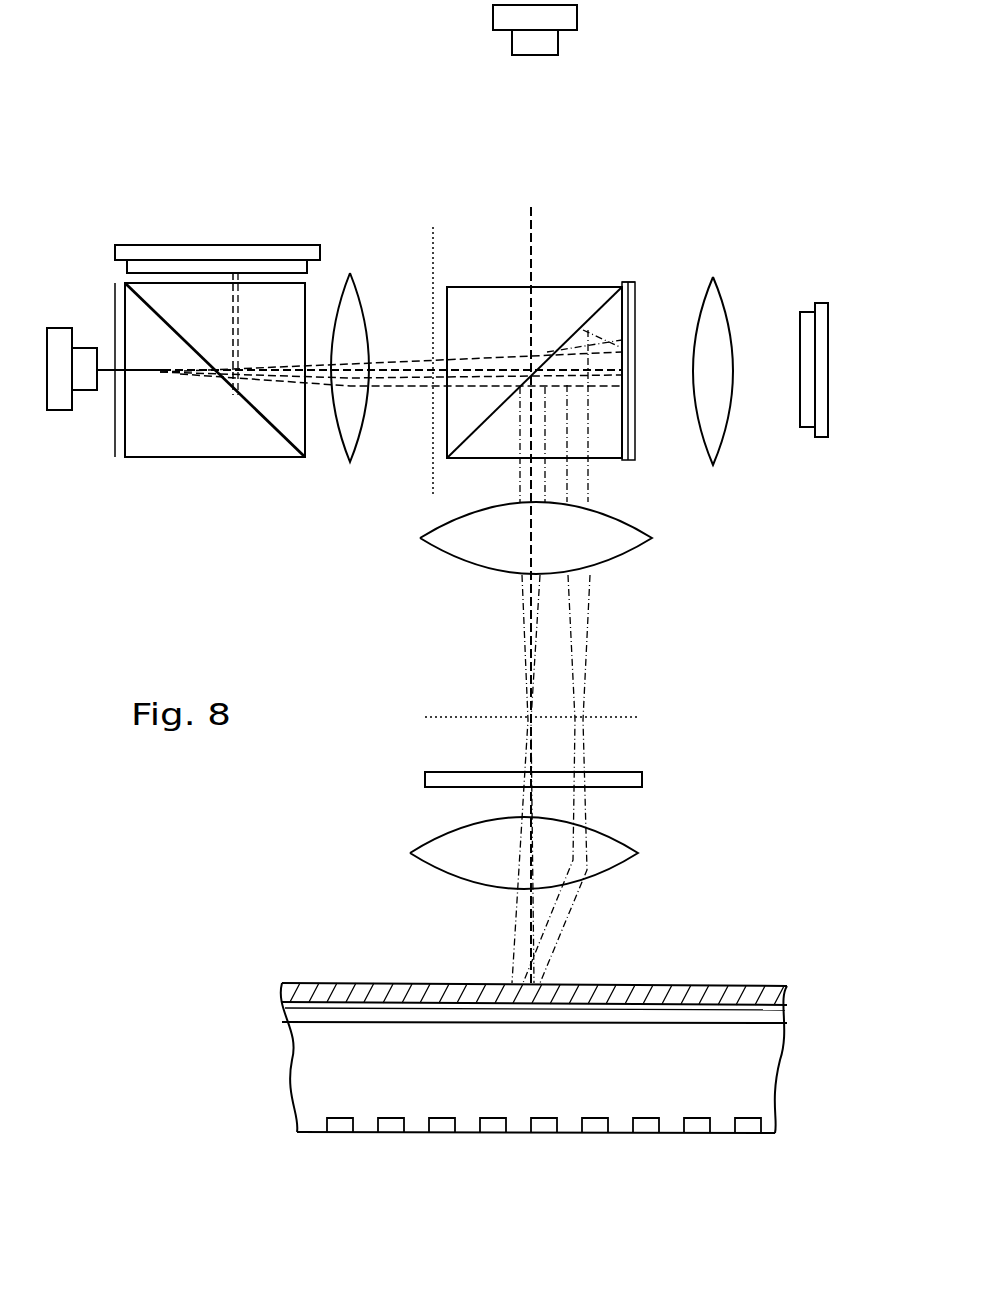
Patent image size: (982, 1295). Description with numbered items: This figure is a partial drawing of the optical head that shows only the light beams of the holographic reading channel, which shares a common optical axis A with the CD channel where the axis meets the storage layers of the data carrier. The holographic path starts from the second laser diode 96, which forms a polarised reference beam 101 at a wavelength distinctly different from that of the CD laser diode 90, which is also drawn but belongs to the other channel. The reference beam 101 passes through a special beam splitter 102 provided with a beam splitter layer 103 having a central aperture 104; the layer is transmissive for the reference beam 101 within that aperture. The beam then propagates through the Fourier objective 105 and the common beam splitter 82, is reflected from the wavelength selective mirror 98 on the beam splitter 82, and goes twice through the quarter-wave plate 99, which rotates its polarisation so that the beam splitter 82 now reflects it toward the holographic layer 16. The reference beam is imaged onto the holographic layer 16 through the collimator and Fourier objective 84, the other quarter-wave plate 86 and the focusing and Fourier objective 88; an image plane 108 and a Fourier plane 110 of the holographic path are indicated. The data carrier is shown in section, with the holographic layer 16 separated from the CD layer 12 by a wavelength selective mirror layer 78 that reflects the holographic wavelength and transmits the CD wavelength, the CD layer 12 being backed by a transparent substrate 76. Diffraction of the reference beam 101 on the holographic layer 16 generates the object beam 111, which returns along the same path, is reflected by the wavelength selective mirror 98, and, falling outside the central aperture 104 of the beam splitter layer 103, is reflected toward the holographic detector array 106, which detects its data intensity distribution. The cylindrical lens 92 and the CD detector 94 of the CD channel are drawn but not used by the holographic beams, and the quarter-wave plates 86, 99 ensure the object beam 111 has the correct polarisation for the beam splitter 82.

The CD laser diode 90 is at (556, 44).
The optical axis A is at (530, 220).
The second laser diode 96 is at (67, 337).
The beam splitter 102 is at (137, 457).
The holographic detector array 106 is at (201, 251).
The beam splitter layer 103 is at (287, 440).
The central aperture 104 is at (222, 393).
The reference beam 101 is at (185, 375).
The Fourier objective 105 is at (355, 293).
The Fourier plane 110 is at (402, 473).
The beam splitter 82 is at (472, 303).
The wavelength selective mirror 98 is at (632, 282).
The λ/4 plate 99 is at (623, 282).
The cylindrical lens 92 is at (717, 290).
The CD detector 94 is at (802, 423).
The collimator and Fourier objective 84 is at (630, 540).
The object beam 111 is at (587, 620).
The image plane 108 is at (625, 717).
The λ/4 plate 86 is at (630, 778).
The focusing and Fourier objective 88 is at (620, 853).
The holographic layer 16 is at (282, 990).
The wavelength selective mirror layer 78 is at (284, 1005).
The transparent substrate 76 is at (348, 1062).
The CD layer 12 is at (299, 1128).